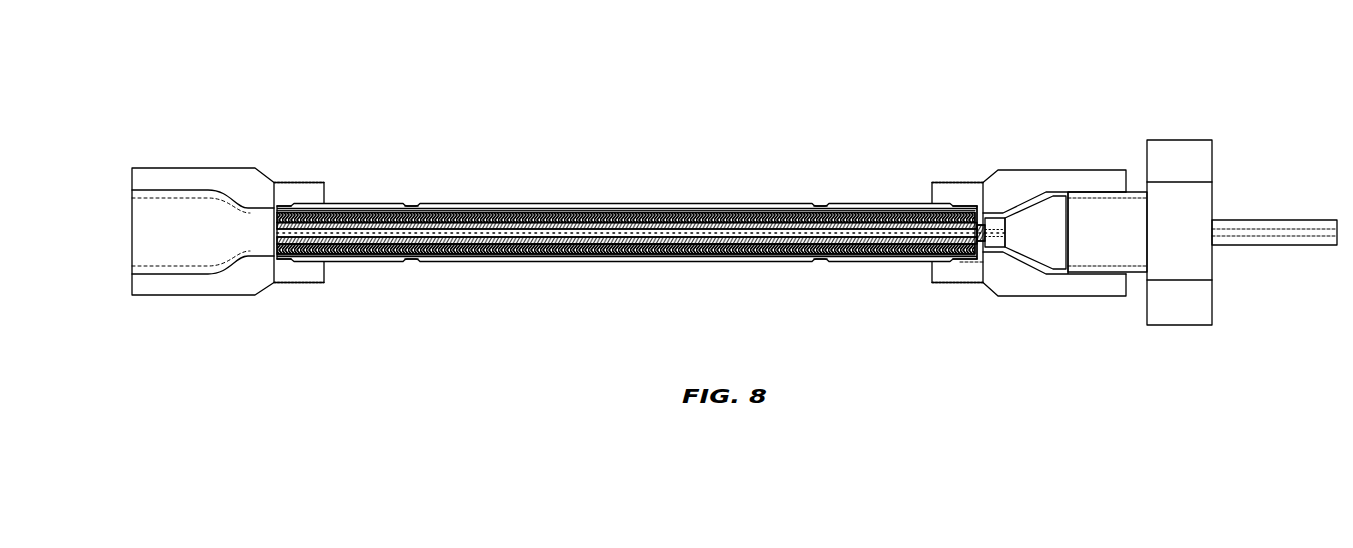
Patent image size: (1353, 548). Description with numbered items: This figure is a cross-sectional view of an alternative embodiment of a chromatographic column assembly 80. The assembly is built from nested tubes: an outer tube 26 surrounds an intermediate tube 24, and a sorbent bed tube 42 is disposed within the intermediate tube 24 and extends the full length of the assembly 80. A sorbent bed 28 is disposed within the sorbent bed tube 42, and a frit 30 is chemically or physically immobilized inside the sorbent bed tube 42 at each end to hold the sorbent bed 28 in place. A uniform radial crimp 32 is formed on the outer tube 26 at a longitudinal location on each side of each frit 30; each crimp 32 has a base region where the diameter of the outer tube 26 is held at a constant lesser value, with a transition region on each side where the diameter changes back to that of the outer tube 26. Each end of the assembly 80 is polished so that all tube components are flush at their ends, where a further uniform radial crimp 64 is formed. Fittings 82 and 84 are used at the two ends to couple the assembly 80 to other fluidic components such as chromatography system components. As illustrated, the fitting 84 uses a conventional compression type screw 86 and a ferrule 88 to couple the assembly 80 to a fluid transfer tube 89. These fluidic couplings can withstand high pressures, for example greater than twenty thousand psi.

The chromatographic column assembly 80 is at (852, 118).
The fitting 82 is at (256, 166).
The fitting 84 is at (998, 168).
The compression type screw 86 is at (1178, 139).
The ferrule 88 is at (1025, 216).
The fluid transfer tube 89 is at (1313, 219).
The intermediate tube 24 is at (765, 216).
The outer tube 26 is at (553, 203).
The sorbent bed 28 is at (523, 236).
The frit 30 is at (274, 233).
The uniform radial crimp 32 is at (413, 198).
The sorbent bed tube 42 is at (678, 244).
The uniform radial crimp 64 is at (285, 266).